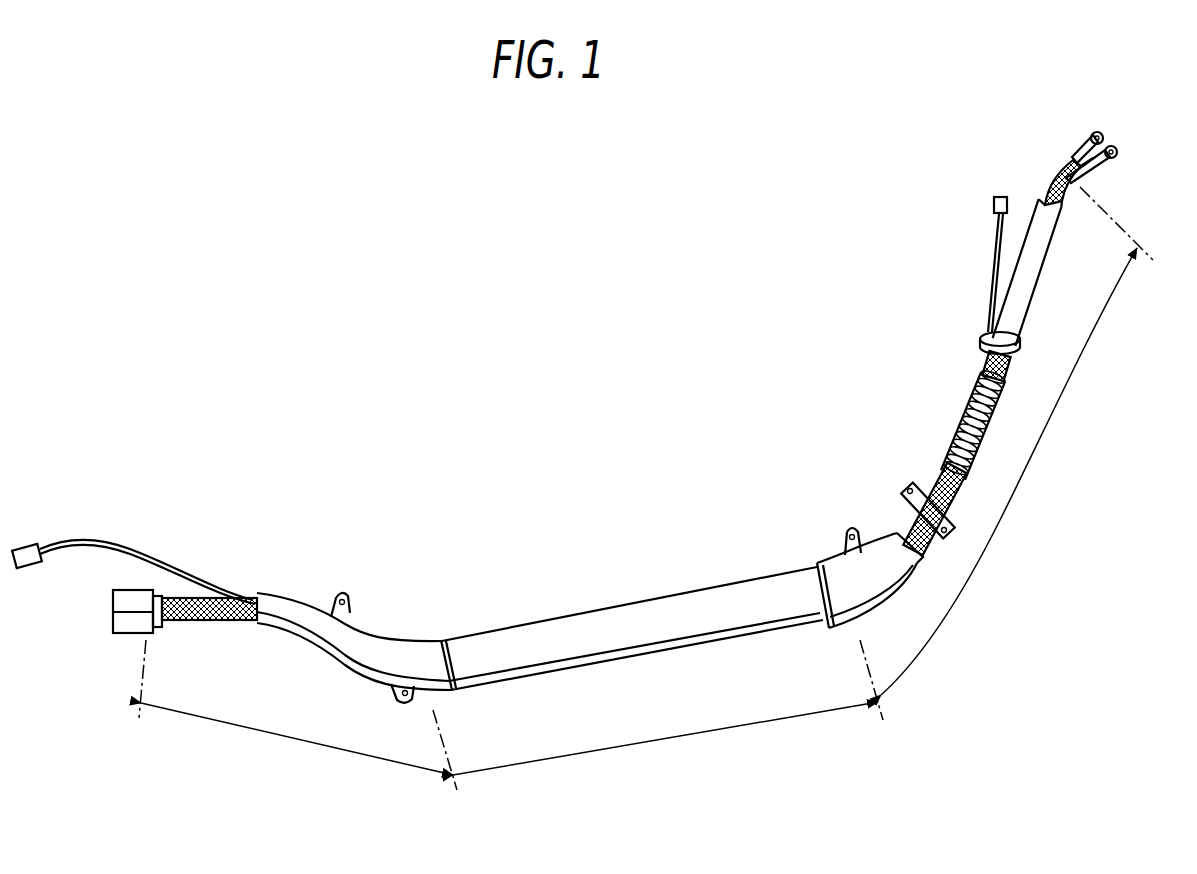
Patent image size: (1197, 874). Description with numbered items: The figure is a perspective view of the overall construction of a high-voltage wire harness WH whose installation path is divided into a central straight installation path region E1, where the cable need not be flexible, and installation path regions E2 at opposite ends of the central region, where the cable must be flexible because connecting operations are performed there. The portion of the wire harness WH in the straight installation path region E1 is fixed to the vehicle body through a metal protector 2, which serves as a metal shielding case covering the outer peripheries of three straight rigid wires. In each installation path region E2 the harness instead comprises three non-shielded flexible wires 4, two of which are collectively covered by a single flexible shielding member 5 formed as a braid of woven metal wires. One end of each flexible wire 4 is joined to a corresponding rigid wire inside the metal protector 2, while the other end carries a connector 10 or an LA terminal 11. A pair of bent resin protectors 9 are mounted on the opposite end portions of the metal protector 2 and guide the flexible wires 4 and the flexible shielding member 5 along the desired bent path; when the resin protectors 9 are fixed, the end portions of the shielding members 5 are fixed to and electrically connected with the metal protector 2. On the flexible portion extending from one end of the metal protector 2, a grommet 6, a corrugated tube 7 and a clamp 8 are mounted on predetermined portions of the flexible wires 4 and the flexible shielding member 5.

The metal protector 2 is at (626, 612).
The flexible wire 4 is at (108, 538).
The flexible shielding member 5 is at (229, 622).
The grommet 6 is at (980, 343).
The corrugated tube 7 is at (962, 417).
The clamp 8 is at (905, 493).
The resin protector 9 is at (388, 644).
The connector 10 is at (25, 568).
The LA terminal 11 is at (1103, 135).
The high-voltage wire harness WH is at (518, 452).
The straight installation path region E1 is at (661, 742).
The installation path region E2 is at (283, 737).